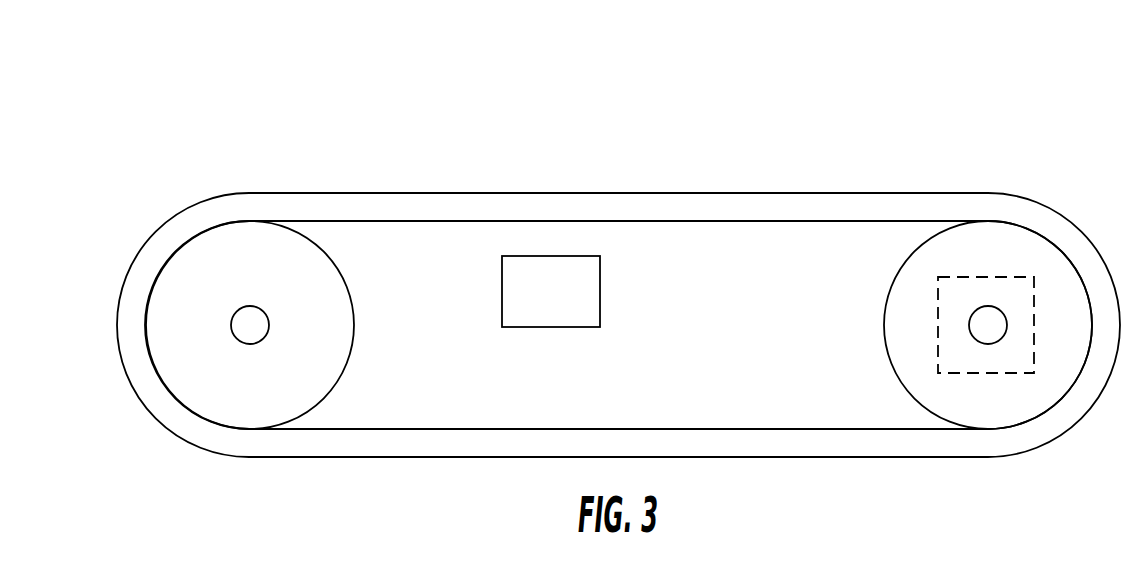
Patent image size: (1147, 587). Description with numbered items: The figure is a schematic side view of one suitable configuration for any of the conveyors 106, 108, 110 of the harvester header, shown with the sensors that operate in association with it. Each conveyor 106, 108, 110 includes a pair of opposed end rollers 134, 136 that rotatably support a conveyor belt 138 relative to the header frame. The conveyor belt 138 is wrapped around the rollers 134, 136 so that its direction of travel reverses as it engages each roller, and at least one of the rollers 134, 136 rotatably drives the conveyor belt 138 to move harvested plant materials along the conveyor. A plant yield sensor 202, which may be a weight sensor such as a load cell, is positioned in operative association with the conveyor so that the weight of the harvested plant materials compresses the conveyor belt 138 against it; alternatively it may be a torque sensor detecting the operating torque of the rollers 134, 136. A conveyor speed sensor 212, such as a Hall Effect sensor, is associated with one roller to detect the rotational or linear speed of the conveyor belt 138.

The first lateral conveyor 106 is at (237, 103).
The second lateral conveyor 108 is at (618, 297).
The central conveyor 110 is at (618, 297).
The roller 134 is at (353, 322).
The roller 136 is at (883, 322).
The conveyor belt 138 is at (765, 192).
The plant yield sensor 202 is at (570, 303).
The conveyor speed sensor 212 is at (987, 277).